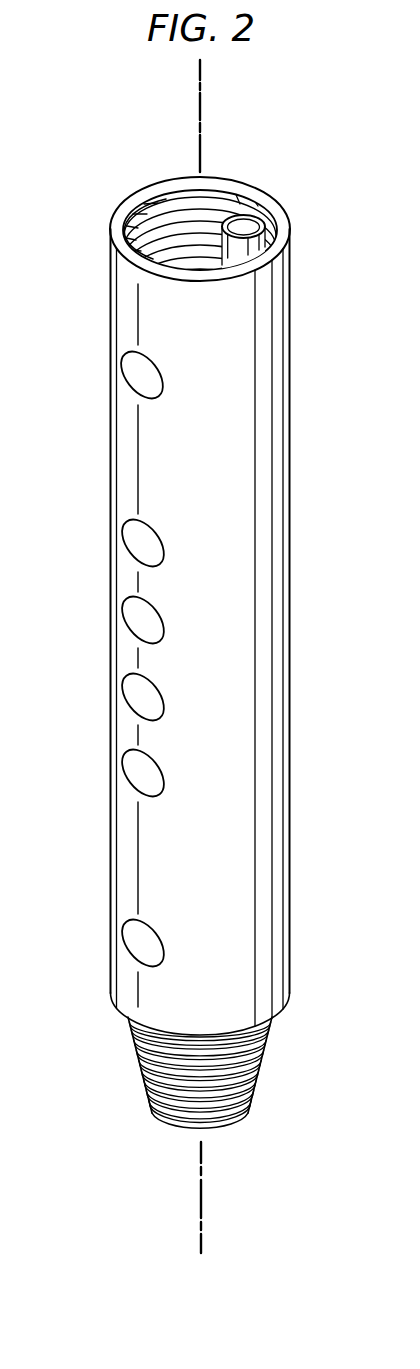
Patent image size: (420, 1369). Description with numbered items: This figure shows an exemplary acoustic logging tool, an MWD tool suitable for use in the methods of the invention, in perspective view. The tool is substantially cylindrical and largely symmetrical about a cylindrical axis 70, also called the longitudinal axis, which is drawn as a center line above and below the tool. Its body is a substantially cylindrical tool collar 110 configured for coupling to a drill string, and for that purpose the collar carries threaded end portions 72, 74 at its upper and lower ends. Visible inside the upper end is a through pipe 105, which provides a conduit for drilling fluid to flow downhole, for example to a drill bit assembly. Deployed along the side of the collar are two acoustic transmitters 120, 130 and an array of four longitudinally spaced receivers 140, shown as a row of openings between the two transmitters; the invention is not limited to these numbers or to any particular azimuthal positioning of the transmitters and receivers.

The cylindrical axis 70 is at (201, 117).
The threaded end portion 72 is at (162, 197).
The threaded end portion 74 is at (141, 1068).
The through pipe 105 is at (247, 220).
The tool collar 110 is at (111, 870).
The acoustic transmitter 120 is at (151, 930).
The acoustic transmitter 130 is at (157, 398).
The receivers 140 is at (105, 520).